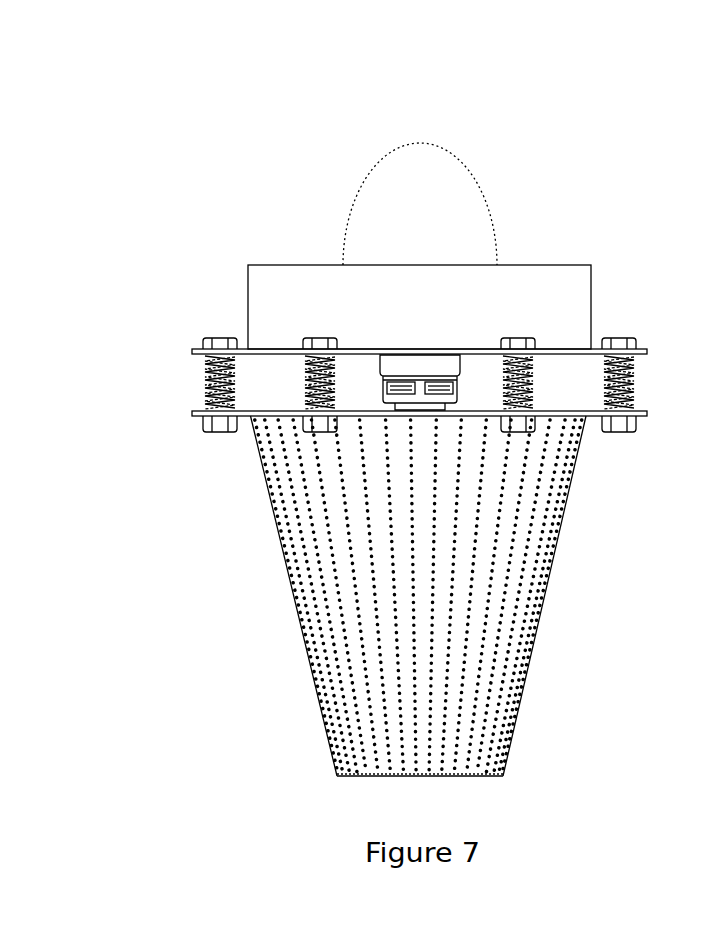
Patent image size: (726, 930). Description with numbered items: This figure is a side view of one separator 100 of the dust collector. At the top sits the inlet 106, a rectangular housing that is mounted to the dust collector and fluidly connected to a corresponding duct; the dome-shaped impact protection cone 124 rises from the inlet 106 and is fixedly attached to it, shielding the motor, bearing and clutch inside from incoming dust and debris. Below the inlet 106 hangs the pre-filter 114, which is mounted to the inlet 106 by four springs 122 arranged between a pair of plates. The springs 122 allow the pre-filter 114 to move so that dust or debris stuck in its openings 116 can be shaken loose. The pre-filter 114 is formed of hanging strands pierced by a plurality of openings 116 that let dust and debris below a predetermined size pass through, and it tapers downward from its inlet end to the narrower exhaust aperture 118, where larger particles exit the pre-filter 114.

The separator 100 is at (258, 110).
The inlet 106 is at (593, 264).
The impact protection cone 124 is at (420, 178).
The springs 122 is at (518, 372).
The openings 116 is at (322, 577).
The exhaust aperture 118 is at (365, 778).
The pre-filter 114 is at (505, 777).